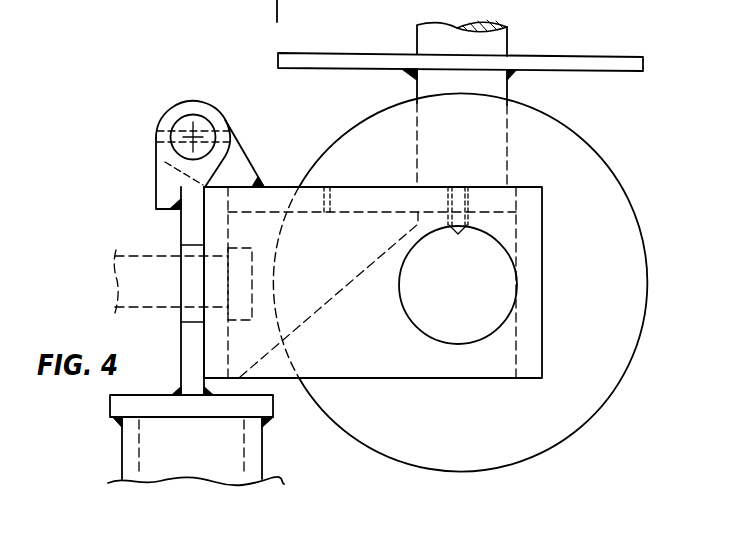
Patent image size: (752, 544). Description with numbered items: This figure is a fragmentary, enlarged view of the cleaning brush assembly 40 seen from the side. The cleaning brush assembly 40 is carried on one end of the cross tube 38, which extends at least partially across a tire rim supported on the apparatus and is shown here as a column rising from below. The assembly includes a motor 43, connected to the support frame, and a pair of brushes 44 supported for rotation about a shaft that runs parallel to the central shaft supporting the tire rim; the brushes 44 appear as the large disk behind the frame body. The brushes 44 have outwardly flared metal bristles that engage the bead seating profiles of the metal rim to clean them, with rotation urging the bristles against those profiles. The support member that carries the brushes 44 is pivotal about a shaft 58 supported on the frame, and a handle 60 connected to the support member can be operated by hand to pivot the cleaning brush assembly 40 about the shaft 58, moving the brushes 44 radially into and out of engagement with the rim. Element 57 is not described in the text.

The cross tube 38 is at (240, 450).
The cleaning brush assembly 40 is at (130, 241).
The motor 43 is at (497, 270).
The brushes 44 is at (551, 127).
The pin 57 is at (199, 130).
The shaft 58 is at (182, 123).
The handle 60 is at (500, 46).